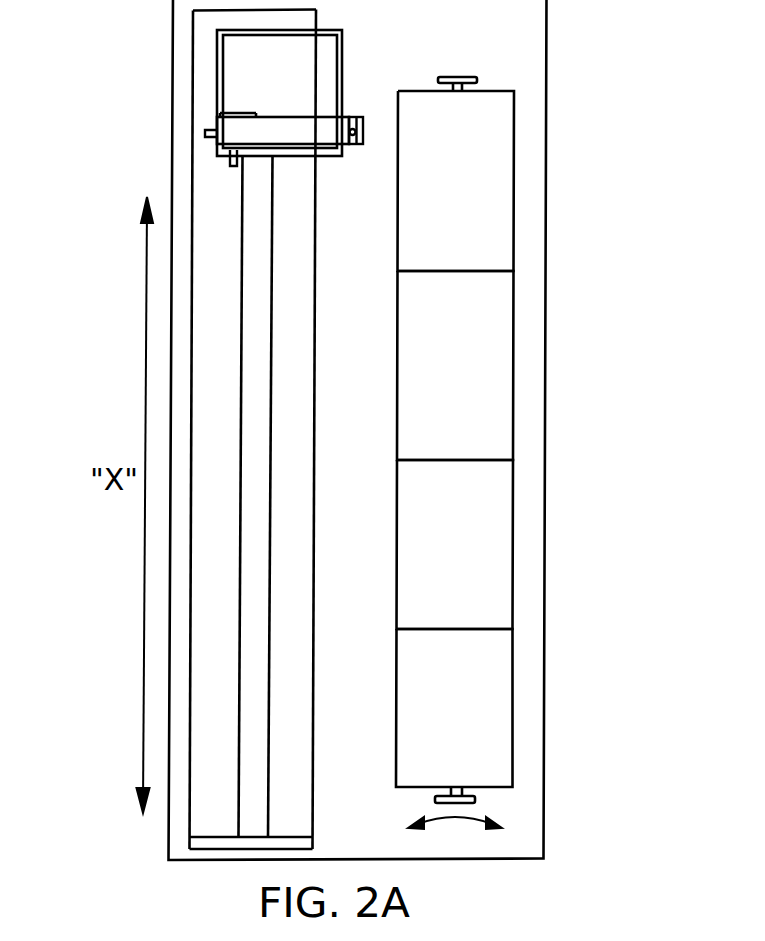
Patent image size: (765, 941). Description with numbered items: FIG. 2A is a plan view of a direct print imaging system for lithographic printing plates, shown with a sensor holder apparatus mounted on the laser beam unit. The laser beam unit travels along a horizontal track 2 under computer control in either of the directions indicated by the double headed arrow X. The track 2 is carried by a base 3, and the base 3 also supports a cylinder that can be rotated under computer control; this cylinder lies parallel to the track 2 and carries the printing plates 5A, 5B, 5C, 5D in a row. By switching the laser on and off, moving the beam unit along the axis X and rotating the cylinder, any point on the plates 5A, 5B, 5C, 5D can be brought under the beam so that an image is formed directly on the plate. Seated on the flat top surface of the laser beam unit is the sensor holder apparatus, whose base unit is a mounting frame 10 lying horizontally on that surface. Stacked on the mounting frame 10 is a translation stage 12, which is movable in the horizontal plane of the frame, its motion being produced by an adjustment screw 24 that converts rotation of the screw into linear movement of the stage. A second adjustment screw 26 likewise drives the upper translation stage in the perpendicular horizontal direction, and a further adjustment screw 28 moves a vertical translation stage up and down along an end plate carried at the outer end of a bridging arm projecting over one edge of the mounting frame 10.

The track 2 is at (252, 310).
The base 3 is at (527, 800).
The printing plate 5A is at (498, 195).
The printing plate 5B is at (498, 370).
The printing plate 5C is at (493, 537).
The printing plate 5D is at (497, 717).
The mounting frame 10 is at (236, 64).
The translation stage 12 is at (229, 134).
The adjustment screw 24 is at (135, 102).
The adjustment screw 26 is at (232, 163).
The adjustment screw 28 is at (351, 128).